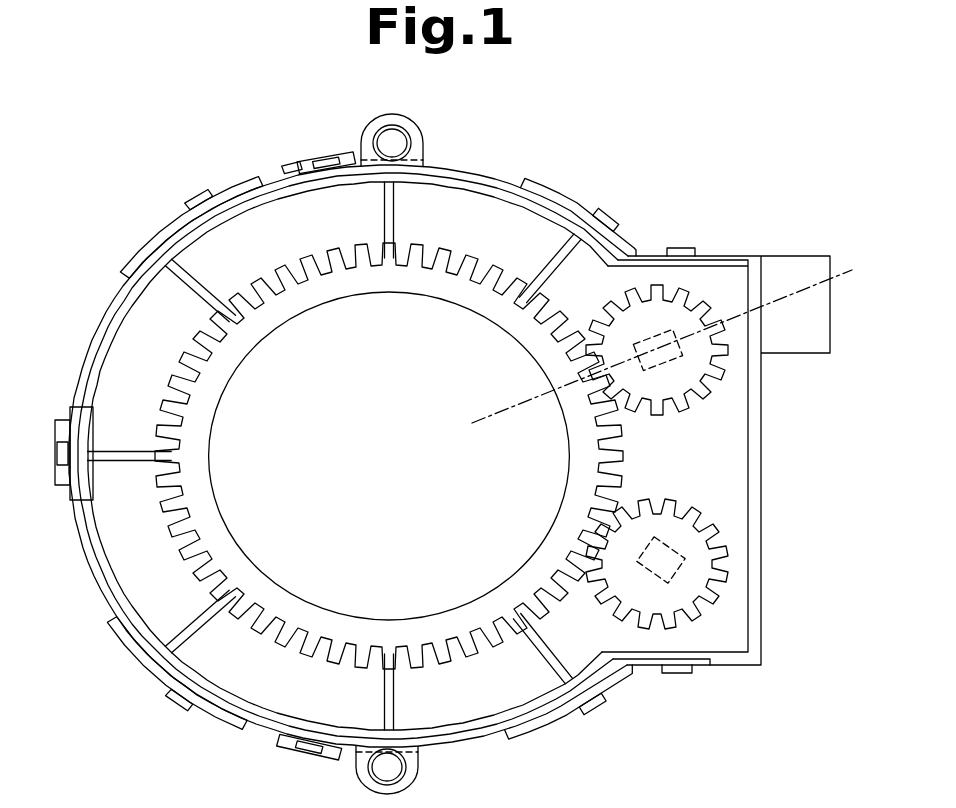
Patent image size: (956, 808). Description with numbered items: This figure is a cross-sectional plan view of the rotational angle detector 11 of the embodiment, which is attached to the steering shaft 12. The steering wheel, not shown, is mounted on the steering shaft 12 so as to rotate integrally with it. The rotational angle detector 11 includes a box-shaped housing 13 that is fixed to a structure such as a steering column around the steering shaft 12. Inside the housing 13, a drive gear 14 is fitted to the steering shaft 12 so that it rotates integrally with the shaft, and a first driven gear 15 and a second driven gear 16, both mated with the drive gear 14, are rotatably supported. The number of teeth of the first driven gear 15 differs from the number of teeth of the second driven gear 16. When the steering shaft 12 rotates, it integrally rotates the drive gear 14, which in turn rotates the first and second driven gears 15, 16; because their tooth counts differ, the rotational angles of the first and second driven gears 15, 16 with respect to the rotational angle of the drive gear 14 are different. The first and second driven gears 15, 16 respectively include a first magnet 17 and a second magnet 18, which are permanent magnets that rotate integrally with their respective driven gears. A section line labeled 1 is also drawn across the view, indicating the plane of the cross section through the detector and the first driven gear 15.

The section line I-I 1 is at (480, 448).
The rotational angle detector 11 is at (627, 176).
The steering shaft 12 is at (349, 310).
The housing 13 is at (108, 340).
The drive gear 14 is at (460, 258).
The first driven gear 15 is at (707, 303).
The second driven gear 16 is at (717, 603).
The first magnet 17 is at (665, 364).
The second magnet 18 is at (668, 532).